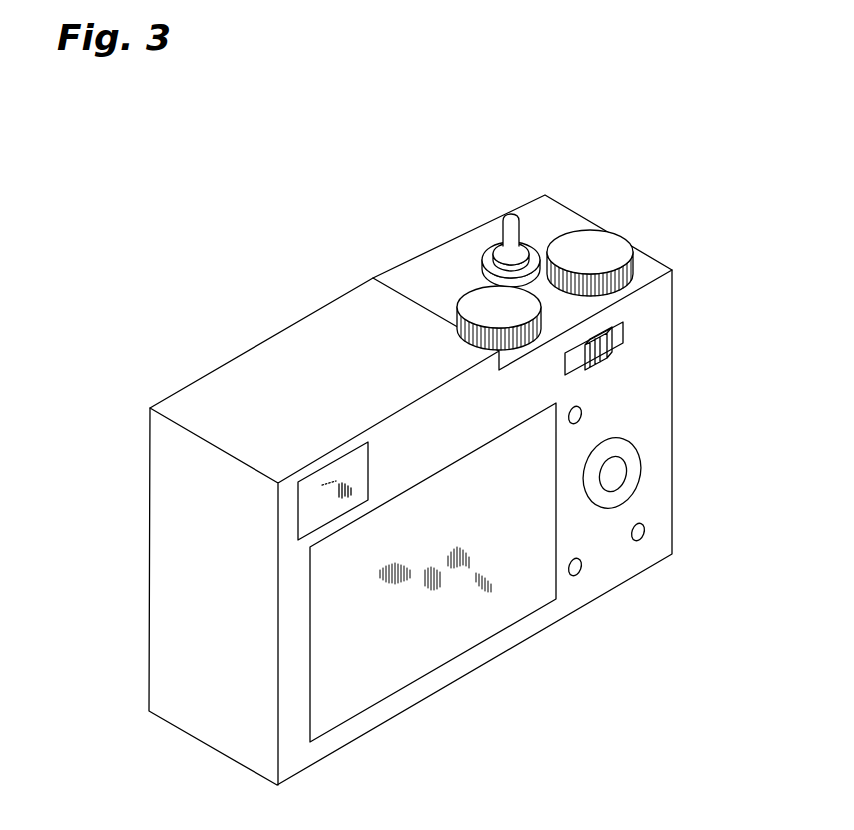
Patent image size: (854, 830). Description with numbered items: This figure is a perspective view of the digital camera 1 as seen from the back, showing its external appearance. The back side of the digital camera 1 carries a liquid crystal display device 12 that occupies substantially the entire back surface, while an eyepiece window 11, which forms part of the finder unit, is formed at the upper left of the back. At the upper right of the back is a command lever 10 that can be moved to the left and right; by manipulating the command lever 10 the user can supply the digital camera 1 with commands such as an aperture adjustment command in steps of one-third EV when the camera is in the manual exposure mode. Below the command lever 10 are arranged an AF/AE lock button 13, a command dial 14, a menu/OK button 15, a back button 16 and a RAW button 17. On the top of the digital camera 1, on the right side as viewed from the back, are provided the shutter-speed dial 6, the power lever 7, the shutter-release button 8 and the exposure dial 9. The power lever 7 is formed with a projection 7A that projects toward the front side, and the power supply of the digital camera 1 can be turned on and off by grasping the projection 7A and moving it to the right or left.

The digital camera 1 is at (660, 147).
The shutter-speed dial 6 is at (480, 287).
The power lever 7 is at (488, 253).
The projection 7A is at (509, 215).
The shutter-release button 8 is at (517, 252).
The exposure dial 9 is at (620, 252).
The command lever 10 is at (613, 335).
The eyepiece window 11 is at (362, 472).
The liquid crystal display device 12 is at (440, 633).
The AF/AE lock button 13 is at (583, 408).
The command dial 14 is at (635, 455).
The menu/OK button 15 is at (613, 477).
The back button 16 is at (580, 575).
The RAW button 17 is at (642, 539).